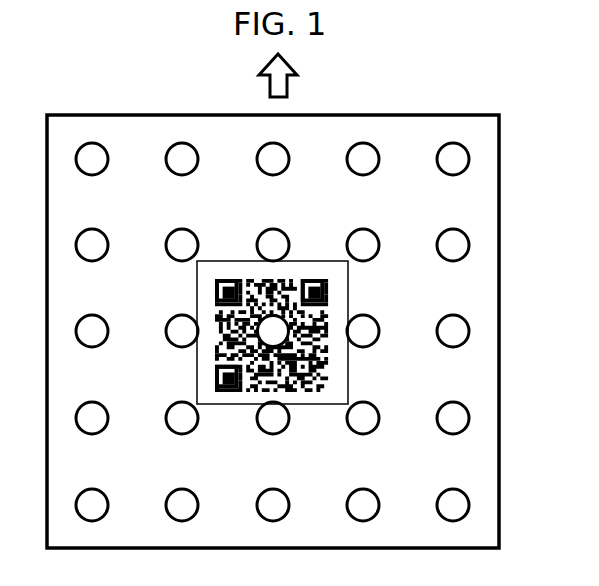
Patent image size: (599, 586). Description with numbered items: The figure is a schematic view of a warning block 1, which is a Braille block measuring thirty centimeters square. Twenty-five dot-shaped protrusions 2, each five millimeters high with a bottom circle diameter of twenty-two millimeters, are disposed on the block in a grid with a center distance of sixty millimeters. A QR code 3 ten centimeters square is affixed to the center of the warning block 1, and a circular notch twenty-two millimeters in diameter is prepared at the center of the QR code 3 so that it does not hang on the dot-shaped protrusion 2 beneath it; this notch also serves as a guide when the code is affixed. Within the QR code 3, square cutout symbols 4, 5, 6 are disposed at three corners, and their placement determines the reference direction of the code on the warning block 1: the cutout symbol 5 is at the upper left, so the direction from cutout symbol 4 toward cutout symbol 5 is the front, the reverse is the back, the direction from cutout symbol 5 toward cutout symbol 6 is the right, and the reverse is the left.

The warning block 1 is at (426, 115).
The dot-shaped protrusion 2 is at (466, 327).
The QR code 3 is at (348, 303).
The cutout symbol 4 is at (220, 378).
The cutout symbol 5 is at (214, 292).
The cutout symbol 6 is at (331, 290).